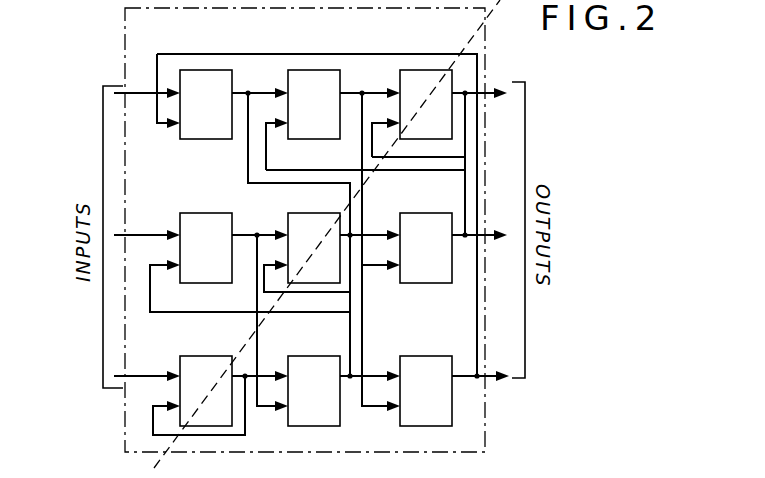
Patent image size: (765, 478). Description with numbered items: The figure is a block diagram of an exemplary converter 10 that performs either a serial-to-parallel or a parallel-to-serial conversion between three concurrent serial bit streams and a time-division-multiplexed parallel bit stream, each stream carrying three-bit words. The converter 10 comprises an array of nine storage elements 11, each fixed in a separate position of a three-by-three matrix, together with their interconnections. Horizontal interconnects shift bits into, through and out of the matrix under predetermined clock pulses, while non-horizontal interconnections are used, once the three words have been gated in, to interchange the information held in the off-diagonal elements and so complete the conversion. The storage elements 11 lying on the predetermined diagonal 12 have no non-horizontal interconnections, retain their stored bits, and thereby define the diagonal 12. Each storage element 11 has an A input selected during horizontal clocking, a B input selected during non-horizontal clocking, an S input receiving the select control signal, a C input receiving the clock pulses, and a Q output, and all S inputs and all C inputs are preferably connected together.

The converter 10 is at (127, 58).
The storage element 11 is at (184, 139).
The diagonal 12 is at (480, 30).